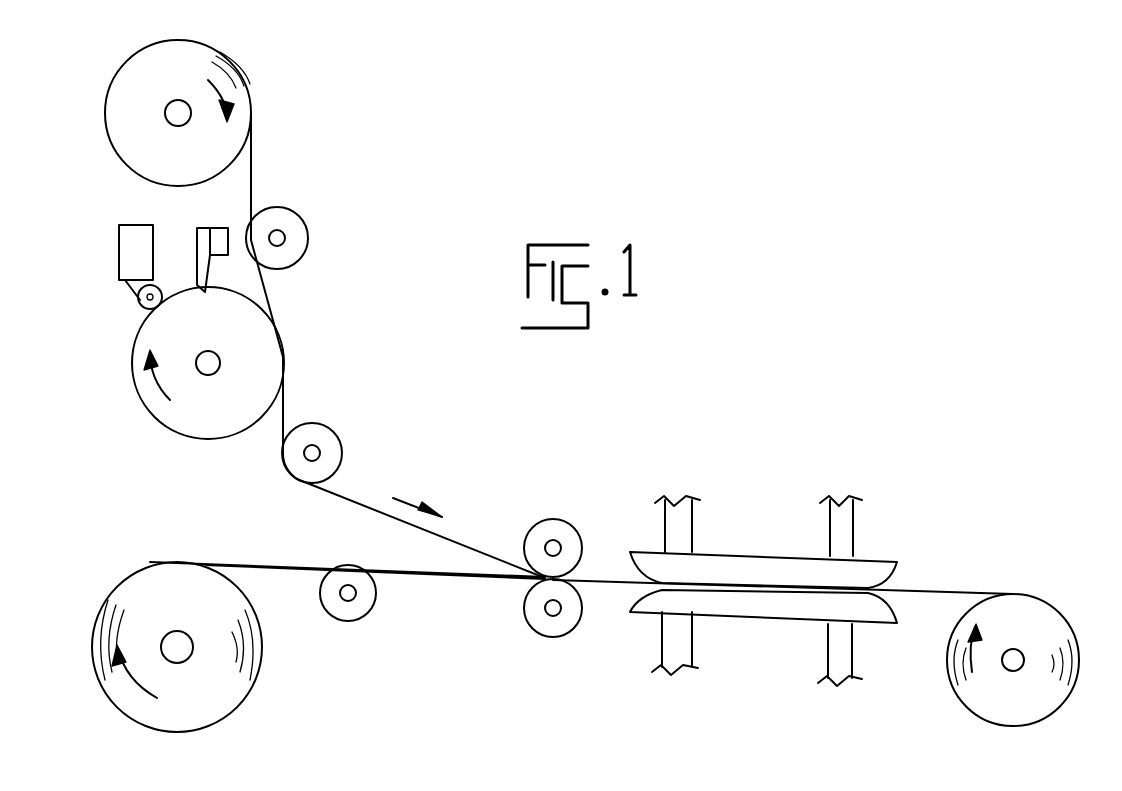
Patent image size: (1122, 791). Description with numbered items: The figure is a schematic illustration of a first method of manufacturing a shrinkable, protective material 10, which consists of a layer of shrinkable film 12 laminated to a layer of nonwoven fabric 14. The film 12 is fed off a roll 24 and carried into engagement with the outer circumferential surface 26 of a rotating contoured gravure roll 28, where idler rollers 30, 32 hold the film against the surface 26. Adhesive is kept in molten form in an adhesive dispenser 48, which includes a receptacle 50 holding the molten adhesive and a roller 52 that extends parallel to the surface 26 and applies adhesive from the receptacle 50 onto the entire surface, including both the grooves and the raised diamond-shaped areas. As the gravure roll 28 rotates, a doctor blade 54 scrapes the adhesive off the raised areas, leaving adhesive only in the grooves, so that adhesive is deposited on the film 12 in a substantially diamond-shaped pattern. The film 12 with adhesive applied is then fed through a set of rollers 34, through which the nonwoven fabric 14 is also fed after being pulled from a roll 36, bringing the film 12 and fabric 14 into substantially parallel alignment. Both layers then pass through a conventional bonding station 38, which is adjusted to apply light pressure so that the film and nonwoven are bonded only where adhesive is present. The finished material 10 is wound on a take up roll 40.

The protective material 10 is at (1022, 591).
The layer of shrinkable film 12 is at (251, 157).
The layer of nonwoven fabric 14 is at (273, 563).
The roll 24 is at (192, 63).
The outer circumferential surface 26 is at (252, 303).
The gravure roll 28 is at (195, 413).
The idler roller 30 is at (298, 227).
The idler roller 32 is at (330, 443).
The set of rollers 34 is at (578, 545).
The roll 36 is at (210, 690).
The bonding station 38 is at (757, 548).
The take up roll 40 is at (1050, 643).
The adhesive dispenser 48 is at (118, 242).
The receptacle 50 is at (140, 242).
The roller 52 is at (143, 300).
The doctor blade 54 is at (207, 267).